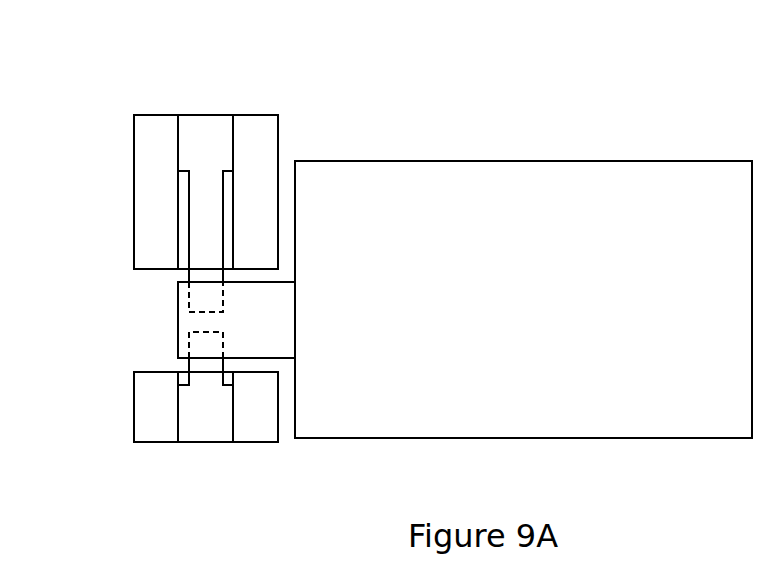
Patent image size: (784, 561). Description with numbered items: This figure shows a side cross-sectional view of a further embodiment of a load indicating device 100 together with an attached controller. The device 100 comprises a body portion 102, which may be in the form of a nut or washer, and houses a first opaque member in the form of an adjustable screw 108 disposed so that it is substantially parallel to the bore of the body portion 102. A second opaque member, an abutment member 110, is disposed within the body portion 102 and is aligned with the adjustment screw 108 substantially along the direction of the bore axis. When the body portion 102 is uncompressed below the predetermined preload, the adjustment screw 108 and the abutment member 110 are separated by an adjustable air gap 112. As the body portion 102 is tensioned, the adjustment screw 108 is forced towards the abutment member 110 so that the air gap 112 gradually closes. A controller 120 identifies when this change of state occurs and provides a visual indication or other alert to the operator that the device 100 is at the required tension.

The load indicating device 100 is at (159, 277).
The body portion 102 is at (162, 412).
The adjustable screw 108 is at (200, 214).
The abutment member 110 is at (215, 425).
The air gap 112 is at (200, 320).
The controller 120 is at (608, 127).